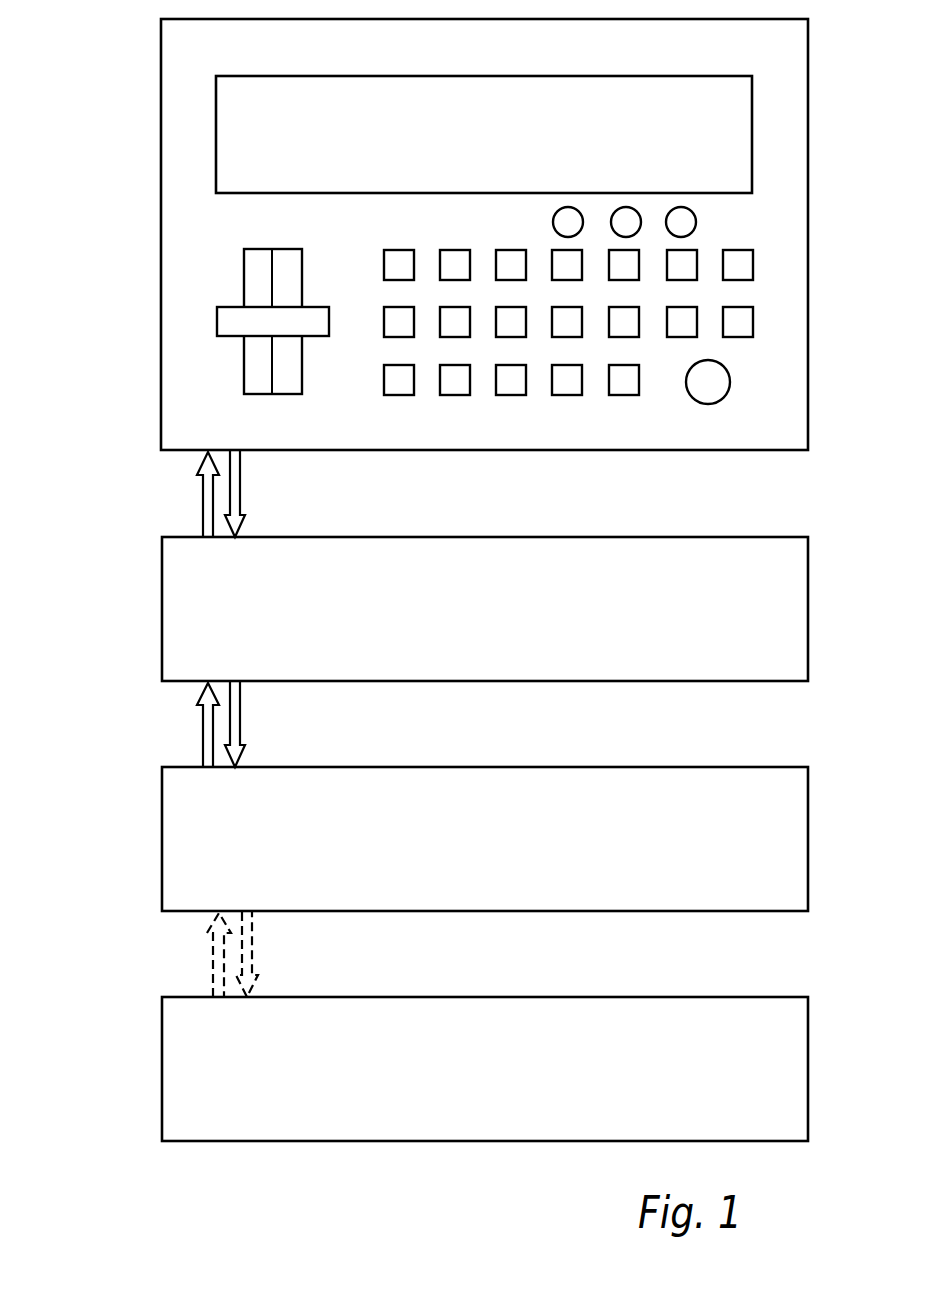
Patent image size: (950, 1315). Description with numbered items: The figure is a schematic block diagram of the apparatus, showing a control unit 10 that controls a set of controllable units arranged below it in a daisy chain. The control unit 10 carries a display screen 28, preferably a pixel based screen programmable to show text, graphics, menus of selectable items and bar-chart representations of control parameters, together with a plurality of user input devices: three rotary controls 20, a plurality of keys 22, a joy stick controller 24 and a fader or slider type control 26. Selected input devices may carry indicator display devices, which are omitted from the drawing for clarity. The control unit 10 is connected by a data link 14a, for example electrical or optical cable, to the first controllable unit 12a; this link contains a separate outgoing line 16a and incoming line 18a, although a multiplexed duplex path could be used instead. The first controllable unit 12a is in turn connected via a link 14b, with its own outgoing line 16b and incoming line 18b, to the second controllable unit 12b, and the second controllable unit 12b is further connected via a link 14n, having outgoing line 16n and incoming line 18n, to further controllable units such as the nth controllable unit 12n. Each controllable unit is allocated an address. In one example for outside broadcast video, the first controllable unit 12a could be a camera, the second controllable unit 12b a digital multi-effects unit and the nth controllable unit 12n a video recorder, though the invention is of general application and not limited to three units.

The control unit 10 is at (161, 409).
The first controllable unit 12a is at (162, 628).
The second controllable unit 12b is at (162, 862).
The nth controllable unit 12n is at (162, 1092).
The data link 14a is at (93, 470).
The link 14b is at (93, 700).
The link 14n is at (105, 930).
The outgoing line 16a is at (230, 480).
The outgoing line 16b is at (230, 710).
The outgoing line 16n is at (242, 940).
The incoming line 18a is at (203, 522).
The incoming line 18b is at (203, 752).
The incoming line 18n is at (213, 980).
The rotary controls 20 is at (696, 223).
The keys 22 is at (753, 267).
The joy stick controller 24 is at (731, 381).
The fader or slider type control 26 is at (217, 320).
The display screen 28 is at (216, 128).